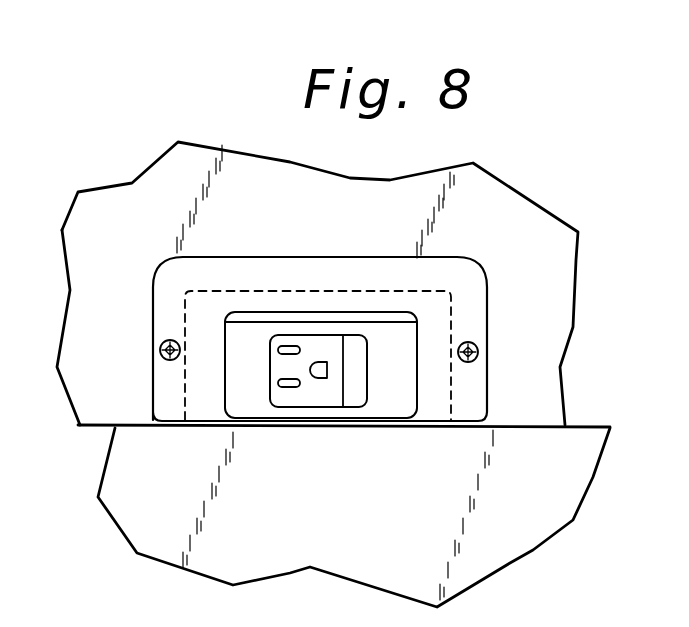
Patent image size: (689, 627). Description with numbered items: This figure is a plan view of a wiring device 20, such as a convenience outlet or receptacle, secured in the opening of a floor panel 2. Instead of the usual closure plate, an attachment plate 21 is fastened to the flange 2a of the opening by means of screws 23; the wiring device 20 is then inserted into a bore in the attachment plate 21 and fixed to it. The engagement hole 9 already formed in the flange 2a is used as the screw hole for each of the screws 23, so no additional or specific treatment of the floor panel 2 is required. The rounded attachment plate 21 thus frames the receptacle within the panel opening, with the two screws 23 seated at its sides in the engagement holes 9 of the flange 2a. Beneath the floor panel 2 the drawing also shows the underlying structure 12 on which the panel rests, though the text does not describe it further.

The floor panel 2 is at (382, 194).
The flange 2a is at (400, 292).
The engagement hole 9 is at (153, 337).
The lower panel / base 12 is at (557, 510).
The wiring device 20 is at (390, 405).
The attachment plate 21 is at (440, 320).
The screws 23 is at (160, 355).